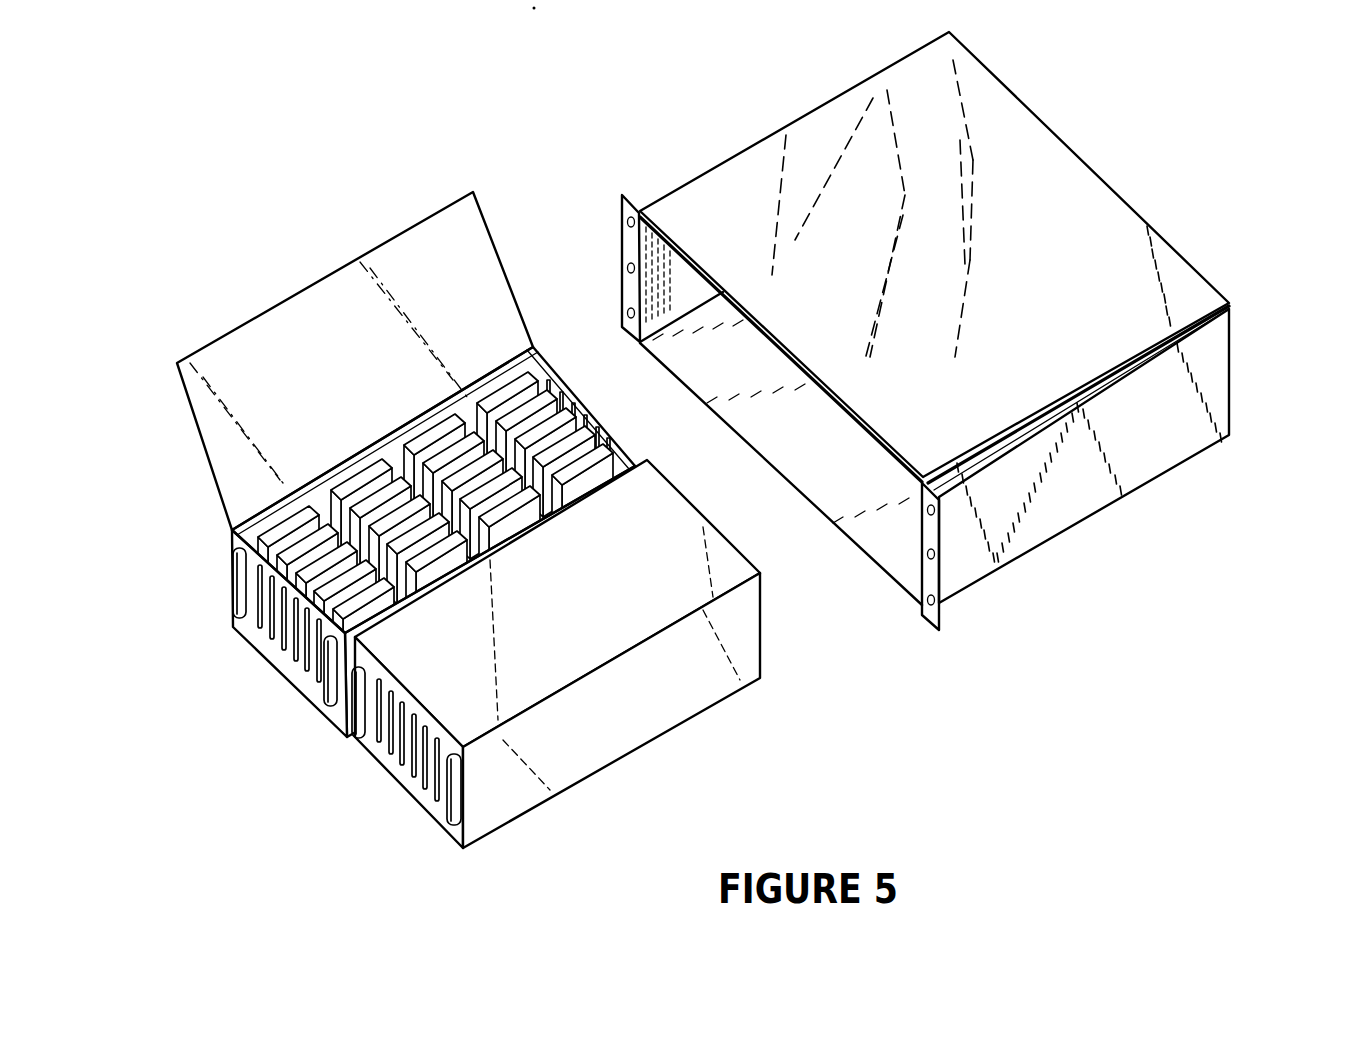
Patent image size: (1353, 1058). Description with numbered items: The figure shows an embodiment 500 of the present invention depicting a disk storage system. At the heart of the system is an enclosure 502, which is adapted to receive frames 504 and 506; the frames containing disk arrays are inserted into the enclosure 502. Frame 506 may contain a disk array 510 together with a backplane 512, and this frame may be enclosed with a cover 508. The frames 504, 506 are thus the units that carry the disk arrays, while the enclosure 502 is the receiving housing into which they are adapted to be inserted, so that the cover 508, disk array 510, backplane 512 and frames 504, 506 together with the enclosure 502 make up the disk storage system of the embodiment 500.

The embodiment 500 is at (730, 440).
The enclosure 502 is at (1090, 488).
The frame 504 is at (662, 717).
The frame 506 is at (312, 693).
The cover 508 is at (325, 322).
The disk array 510 is at (513, 382).
The backplane 512 is at (246, 622).